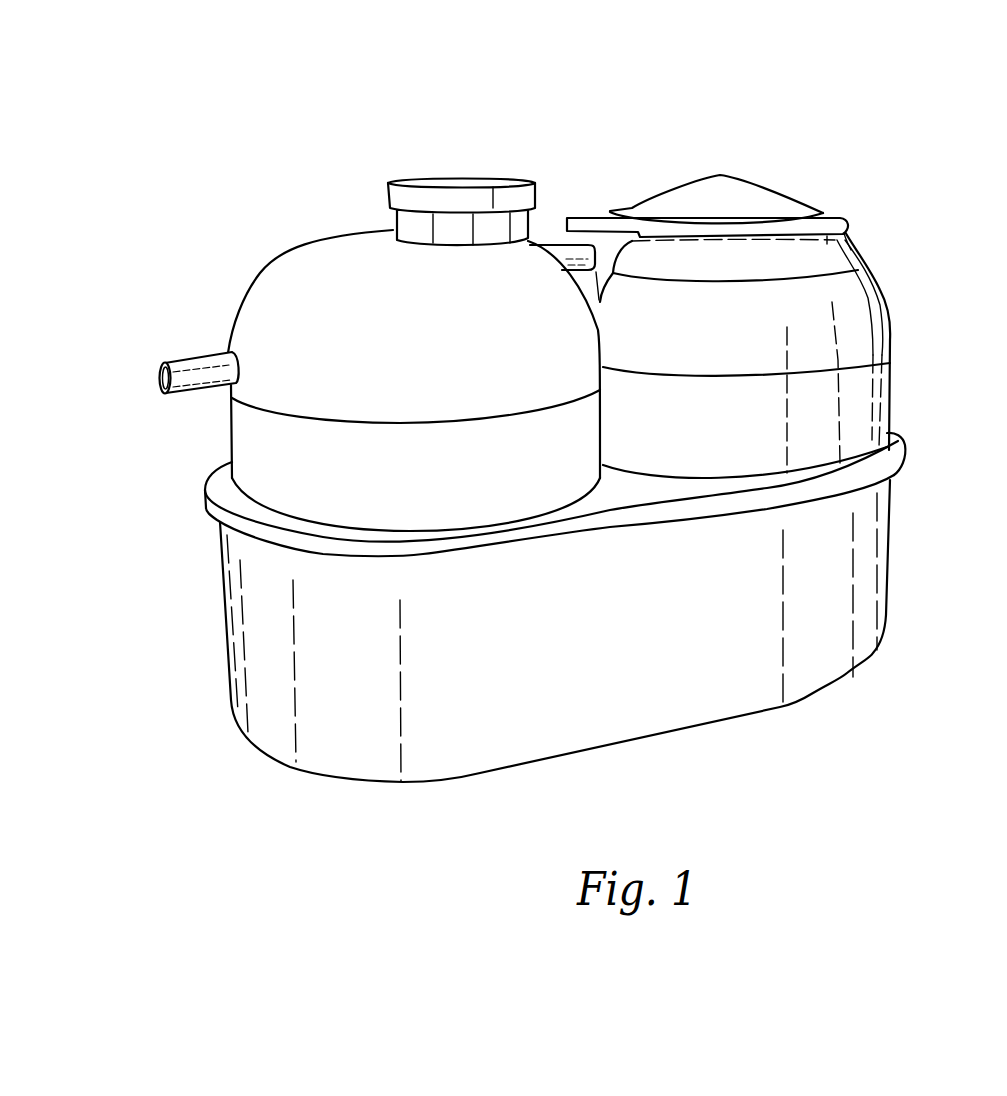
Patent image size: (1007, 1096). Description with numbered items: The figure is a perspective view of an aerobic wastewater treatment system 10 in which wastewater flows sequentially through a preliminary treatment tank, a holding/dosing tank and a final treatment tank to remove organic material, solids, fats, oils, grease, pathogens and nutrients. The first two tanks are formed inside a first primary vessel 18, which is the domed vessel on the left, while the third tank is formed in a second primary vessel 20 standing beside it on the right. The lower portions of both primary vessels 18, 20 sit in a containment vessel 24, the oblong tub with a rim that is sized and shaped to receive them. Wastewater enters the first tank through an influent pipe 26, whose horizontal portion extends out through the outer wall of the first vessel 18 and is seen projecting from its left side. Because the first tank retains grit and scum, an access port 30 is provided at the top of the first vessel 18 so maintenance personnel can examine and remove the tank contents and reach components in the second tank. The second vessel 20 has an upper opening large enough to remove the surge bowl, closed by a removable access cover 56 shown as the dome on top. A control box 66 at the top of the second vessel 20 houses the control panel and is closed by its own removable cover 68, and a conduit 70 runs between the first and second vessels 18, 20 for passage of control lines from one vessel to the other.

The aerobic wastewater treatment system 10 is at (554, 424).
The first primary vessel 18 is at (287, 307).
The second primary vessel 20 is at (893, 333).
The containment vessel 24 is at (820, 697).
The influent pipe 26 is at (193, 367).
The access port 30 is at (460, 183).
The removable access cover 56 is at (783, 197).
The control box 66 is at (612, 262).
The removable cover 68 is at (610, 212).
The conduit 70 is at (562, 248).